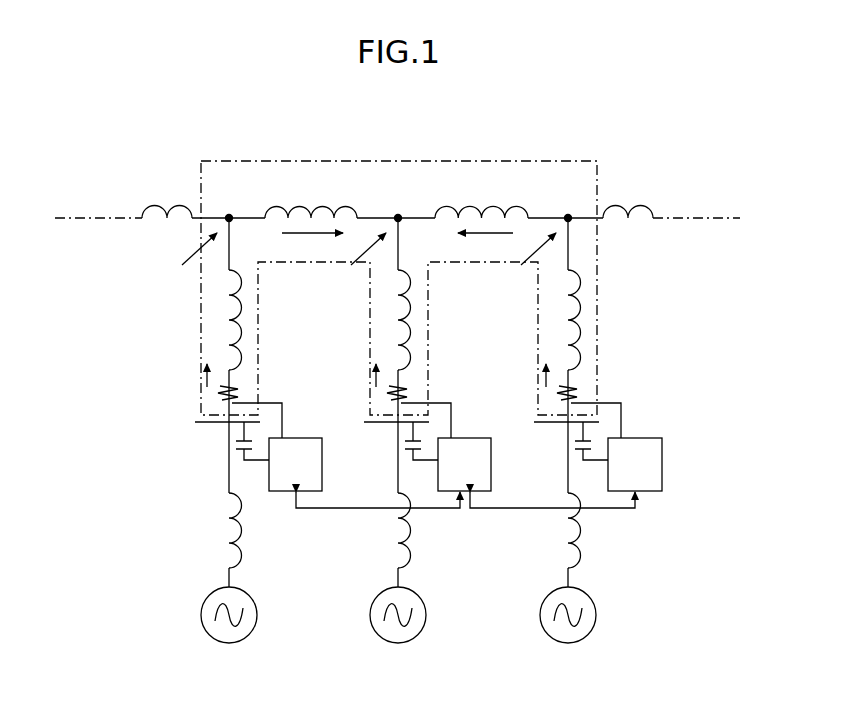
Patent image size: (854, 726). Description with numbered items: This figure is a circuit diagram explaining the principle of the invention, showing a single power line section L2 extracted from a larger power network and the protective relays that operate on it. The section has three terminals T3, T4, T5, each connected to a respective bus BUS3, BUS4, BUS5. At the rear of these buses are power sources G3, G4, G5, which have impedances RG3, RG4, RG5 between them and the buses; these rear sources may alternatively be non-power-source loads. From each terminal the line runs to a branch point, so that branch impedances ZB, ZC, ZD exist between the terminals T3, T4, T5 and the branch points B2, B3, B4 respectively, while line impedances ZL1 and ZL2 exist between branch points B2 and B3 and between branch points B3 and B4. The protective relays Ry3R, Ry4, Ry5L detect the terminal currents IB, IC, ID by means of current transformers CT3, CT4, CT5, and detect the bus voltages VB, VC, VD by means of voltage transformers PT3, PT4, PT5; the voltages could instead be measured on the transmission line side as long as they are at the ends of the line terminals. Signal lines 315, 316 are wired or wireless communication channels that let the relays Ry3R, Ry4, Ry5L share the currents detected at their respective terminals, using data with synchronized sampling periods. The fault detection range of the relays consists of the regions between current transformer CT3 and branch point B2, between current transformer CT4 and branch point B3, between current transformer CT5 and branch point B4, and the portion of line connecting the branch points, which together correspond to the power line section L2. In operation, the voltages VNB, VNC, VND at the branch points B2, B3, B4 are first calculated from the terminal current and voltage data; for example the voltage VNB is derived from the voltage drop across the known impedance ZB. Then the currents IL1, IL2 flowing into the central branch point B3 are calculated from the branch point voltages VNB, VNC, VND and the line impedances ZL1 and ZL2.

The power line section L2 is at (400, 161).
The line impedance ZL1 is at (337, 195).
The line impedance ZL2 is at (495, 209).
The branch point B2 is at (229, 206).
The branch point B3 is at (398, 206).
The branch point B4 is at (568, 206).
The current IL1 is at (312, 245).
The current IL2 is at (485, 245).
The voltage at branch point VNB is at (186, 261).
The voltage at branch point VNC is at (355, 261).
The voltage at branch point VND is at (525, 261).
The branch impedance ZB is at (228, 310).
The branch impedance ZC is at (397, 310).
The branch impedance ZD is at (567, 310).
The terminal current IB is at (194, 376).
The terminal current IC is at (363, 376).
The terminal current ID is at (532, 376).
The terminal T3 is at (164, 393).
The terminal T4 is at (333, 393).
The terminal T5 is at (503, 393).
The current transformer CT3 is at (235, 391).
The current transformer CT4 is at (404, 391).
The current transformer CT5 is at (574, 391).
The bus BUS3 is at (201, 416).
The bus BUS4 is at (370, 416).
The bus BUS5 is at (540, 416).
The bus voltage VB is at (208, 443).
The bus voltage VC is at (376, 443).
The bus voltage VD is at (547, 443).
The voltage transformer PT3 is at (251, 453).
The voltage transformer PT4 is at (420, 453).
The voltage transformer PT5 is at (590, 453).
The protective relay Ry3R is at (295, 464).
The protective relay Ry4 is at (464, 464).
The protective relay Ry5L is at (635, 464).
The signal line 315 is at (378, 513).
The signal line 316 is at (552, 512).
The impedance RG3 is at (253, 531).
The impedance RG4 is at (422, 531).
The impedance RG5 is at (592, 531).
The power source G3 is at (229, 629).
The power source G4 is at (398, 629).
The power source G5 is at (568, 629).